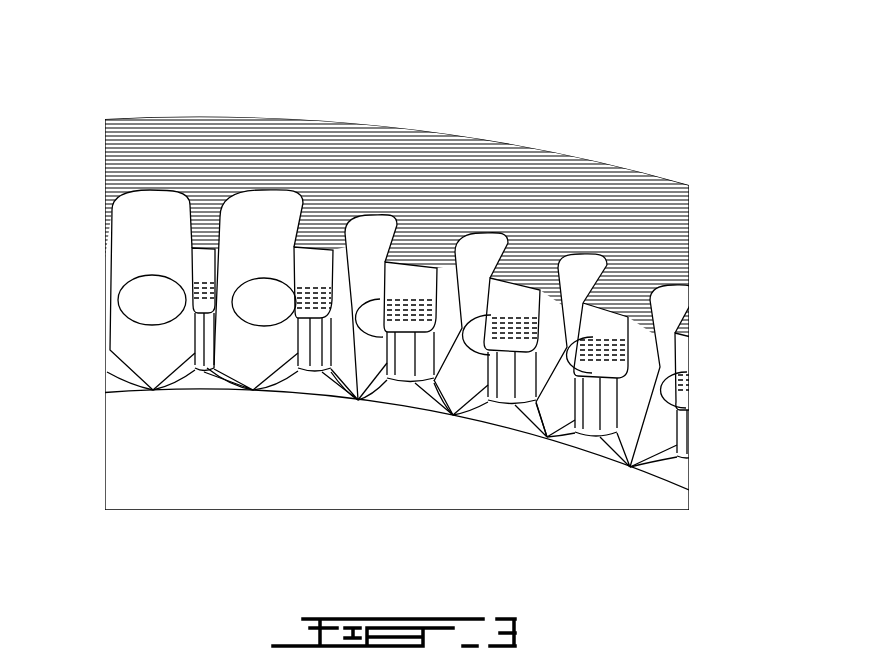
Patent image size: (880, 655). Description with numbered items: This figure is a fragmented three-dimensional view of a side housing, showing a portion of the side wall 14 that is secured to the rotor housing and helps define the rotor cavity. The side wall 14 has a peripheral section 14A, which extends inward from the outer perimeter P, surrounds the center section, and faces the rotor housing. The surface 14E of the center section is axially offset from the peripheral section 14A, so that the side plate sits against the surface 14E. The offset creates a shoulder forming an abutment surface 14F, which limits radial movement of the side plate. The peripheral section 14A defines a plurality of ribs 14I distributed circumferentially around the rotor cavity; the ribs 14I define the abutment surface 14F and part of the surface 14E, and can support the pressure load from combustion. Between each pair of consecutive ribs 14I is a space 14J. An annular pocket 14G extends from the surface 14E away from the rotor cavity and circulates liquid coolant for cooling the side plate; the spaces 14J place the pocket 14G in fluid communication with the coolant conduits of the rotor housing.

The side wall 14 is at (553, 147).
The peripheral section 14A is at (388, 178).
The surface of the center section 14E is at (408, 320).
The abutment surface 14F is at (417, 283).
The pocket 14G is at (499, 474).
The ribs 14I is at (205, 228).
The spaces 14J is at (603, 255).
The outer perimeter P is at (622, 163).